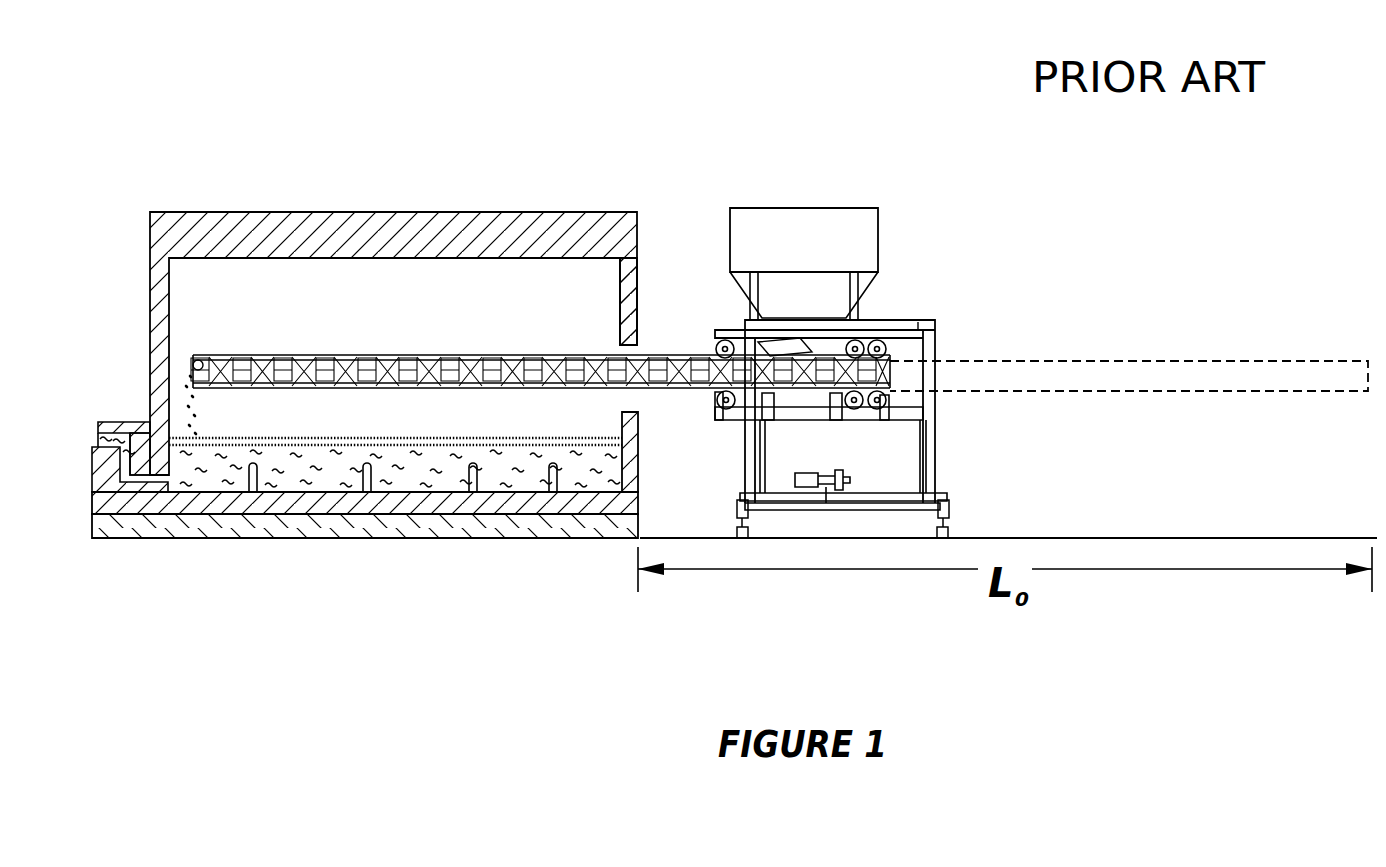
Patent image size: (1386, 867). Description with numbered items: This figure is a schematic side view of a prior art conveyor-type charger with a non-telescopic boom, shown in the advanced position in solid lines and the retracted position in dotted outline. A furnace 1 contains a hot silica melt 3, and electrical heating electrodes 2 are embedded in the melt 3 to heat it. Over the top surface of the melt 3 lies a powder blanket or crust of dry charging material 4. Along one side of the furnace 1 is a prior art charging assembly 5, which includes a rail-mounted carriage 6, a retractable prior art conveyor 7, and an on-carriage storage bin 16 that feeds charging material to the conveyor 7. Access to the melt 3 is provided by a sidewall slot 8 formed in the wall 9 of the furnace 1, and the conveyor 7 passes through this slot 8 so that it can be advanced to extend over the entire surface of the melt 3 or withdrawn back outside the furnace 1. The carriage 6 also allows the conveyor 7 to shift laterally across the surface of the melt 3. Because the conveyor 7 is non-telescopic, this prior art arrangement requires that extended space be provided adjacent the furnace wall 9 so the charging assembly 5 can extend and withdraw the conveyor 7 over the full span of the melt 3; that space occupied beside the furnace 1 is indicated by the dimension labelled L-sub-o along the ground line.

The furnace 1 is at (390, 300).
The electrical heating electrodes 2 is at (362, 466).
The hot silica melt 3 is at (445, 482).
The powder blanket or crust of dry charging material 4 is at (190, 441).
The charging assembly 5 is at (918, 245).
The rail-mounted carriage 6 is at (932, 347).
The conveyor 7 is at (708, 356).
The sidewall slot 8 is at (635, 352).
The wall 9 is at (620, 310).
The on-carriage storage bin 16 is at (823, 235).